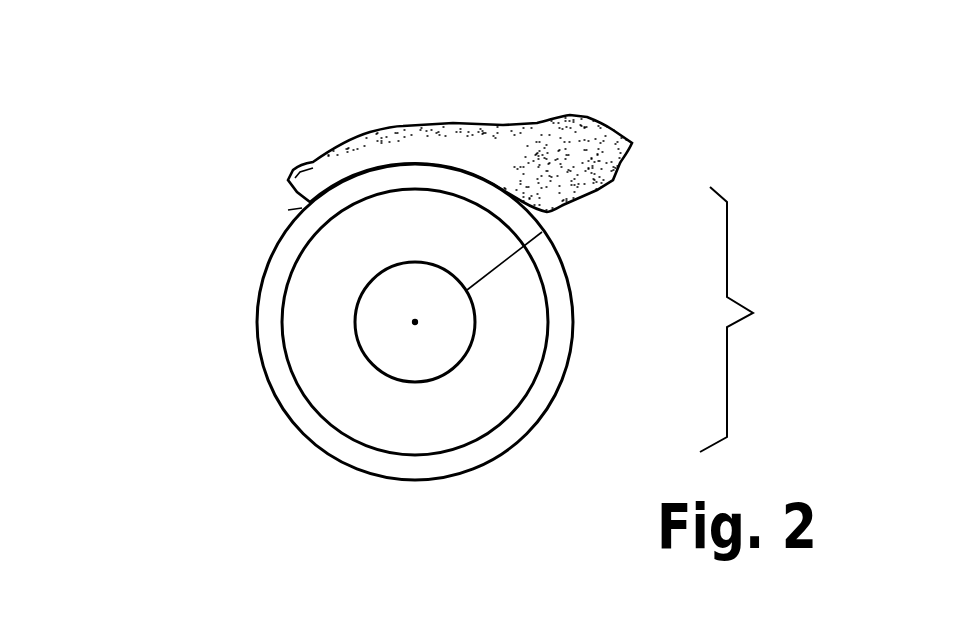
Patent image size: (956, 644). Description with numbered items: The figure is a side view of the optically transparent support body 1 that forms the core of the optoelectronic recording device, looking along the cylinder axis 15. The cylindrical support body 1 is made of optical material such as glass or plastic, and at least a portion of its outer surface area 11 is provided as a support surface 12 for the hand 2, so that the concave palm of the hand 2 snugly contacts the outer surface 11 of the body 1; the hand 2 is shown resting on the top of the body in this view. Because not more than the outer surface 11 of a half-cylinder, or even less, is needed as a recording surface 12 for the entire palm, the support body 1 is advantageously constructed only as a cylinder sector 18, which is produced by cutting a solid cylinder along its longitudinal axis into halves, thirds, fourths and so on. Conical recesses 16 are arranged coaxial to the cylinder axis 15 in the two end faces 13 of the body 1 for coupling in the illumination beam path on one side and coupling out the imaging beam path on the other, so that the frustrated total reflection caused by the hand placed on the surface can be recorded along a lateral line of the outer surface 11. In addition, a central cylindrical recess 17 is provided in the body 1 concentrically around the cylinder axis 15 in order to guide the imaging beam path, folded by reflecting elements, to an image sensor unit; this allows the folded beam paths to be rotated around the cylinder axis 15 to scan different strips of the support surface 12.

The cylindrical support body 1 is at (748, 319).
The hand 2 is at (478, 137).
The outer surface area 11 is at (573, 296).
The support surface 12 is at (368, 280).
The end faces 13 is at (273, 342).
The cylinder axis 15 is at (415, 322).
The conical recesses 16 is at (383, 422).
The cylindrical recess 17 is at (367, 357).
The cylinder sector 18 is at (343, 247).